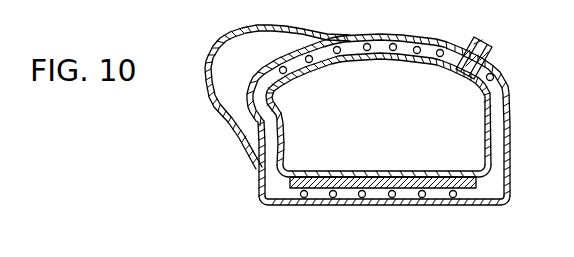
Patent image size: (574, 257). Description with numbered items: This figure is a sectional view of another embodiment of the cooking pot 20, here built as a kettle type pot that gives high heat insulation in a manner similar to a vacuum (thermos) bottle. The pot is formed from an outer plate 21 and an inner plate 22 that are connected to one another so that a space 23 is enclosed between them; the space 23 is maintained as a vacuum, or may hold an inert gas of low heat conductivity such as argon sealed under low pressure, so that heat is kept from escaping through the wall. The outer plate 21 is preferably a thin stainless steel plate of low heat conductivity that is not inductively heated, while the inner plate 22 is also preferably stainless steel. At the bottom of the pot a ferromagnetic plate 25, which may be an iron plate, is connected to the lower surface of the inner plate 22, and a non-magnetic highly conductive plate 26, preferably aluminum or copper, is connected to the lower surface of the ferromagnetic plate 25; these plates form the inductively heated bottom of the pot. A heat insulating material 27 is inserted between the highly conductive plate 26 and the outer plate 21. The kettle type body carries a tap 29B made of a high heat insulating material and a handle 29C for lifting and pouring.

The cooking pot 20 is at (341, 26).
The outer plate 21 is at (260, 190).
The inner plate 22 is at (283, 139).
The space 23 is at (271, 168).
The ferromagnetic plate 25 is at (480, 182).
The non-magnetic highly conductive plate 26 is at (490, 205).
The heat insulating material 27 is at (383, 57).
The tap 29B is at (479, 49).
The handle 29C is at (207, 67).